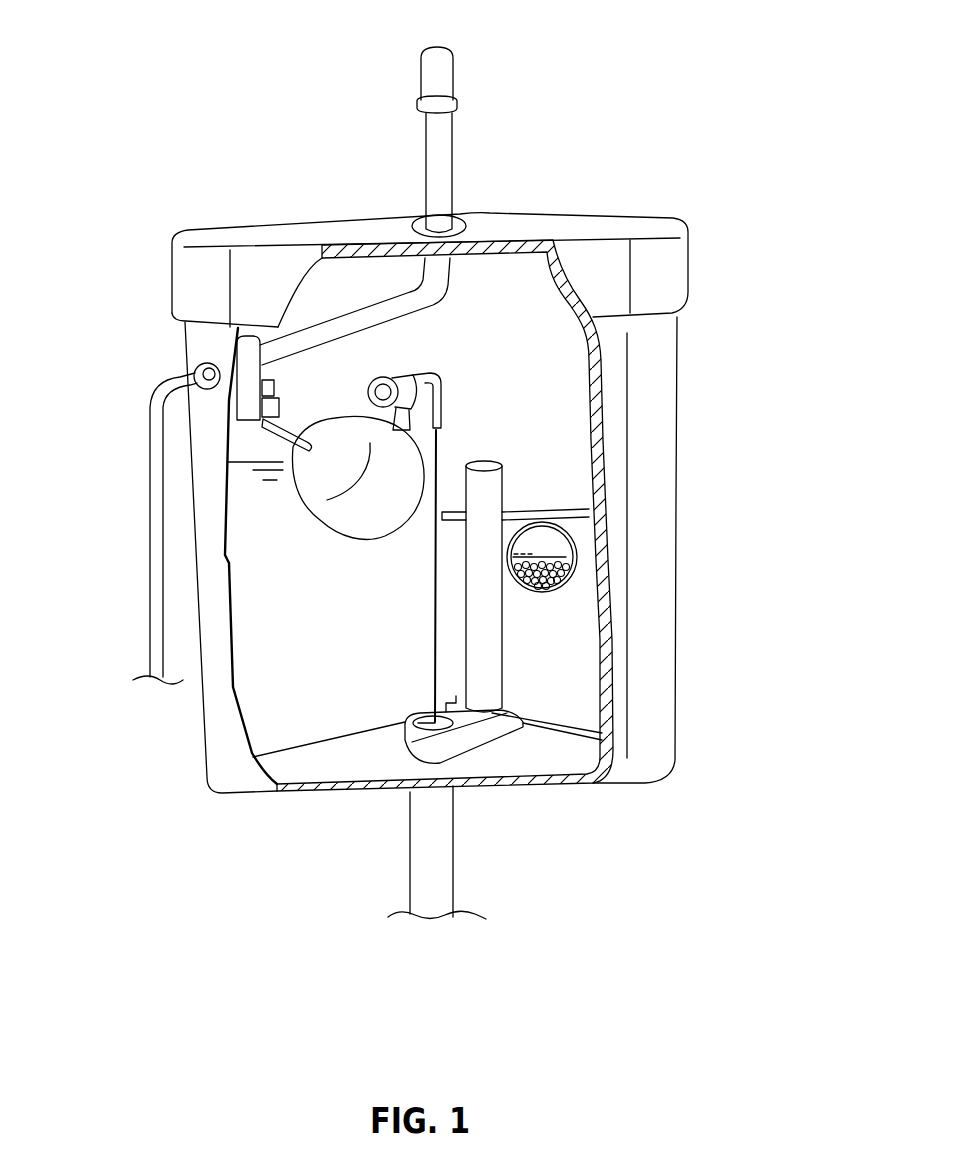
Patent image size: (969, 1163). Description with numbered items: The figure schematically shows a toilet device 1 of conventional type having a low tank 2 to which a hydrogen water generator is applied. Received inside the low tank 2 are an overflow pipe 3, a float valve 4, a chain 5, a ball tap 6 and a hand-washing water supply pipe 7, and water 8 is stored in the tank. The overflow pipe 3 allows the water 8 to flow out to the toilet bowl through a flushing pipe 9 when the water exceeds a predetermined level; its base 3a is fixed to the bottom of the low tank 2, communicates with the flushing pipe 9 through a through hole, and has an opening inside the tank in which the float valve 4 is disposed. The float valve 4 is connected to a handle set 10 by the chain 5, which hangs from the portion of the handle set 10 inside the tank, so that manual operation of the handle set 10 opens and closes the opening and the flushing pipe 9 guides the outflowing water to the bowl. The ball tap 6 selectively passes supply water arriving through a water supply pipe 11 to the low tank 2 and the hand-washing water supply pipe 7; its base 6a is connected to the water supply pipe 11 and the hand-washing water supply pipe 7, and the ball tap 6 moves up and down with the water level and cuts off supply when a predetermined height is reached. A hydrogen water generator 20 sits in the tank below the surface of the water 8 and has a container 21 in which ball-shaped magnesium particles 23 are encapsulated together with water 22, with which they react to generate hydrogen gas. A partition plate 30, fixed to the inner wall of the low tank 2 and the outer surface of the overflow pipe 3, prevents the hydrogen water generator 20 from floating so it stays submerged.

The toilet device 1 is at (223, 113).
The low tank 2 is at (598, 222).
The overflow pipe 3 is at (487, 680).
The base 3a is at (603, 734).
The float valve 4 is at (410, 720).
The chain 5 is at (437, 595).
The ball tap 6 is at (344, 511).
The base 6a is at (194, 374).
The hand-washing water supply pipe 7 is at (437, 168).
The water 8 is at (243, 517).
The flushing pipe 9 is at (440, 867).
The handle set 10 is at (440, 380).
The water supply pipe 11 is at (157, 565).
The hydrogen water generator 20 is at (737, 512).
The container 21 is at (578, 535).
The water 22 is at (533, 548).
The magnesium particles 23 is at (560, 590).
The partition plate 30 is at (547, 500).